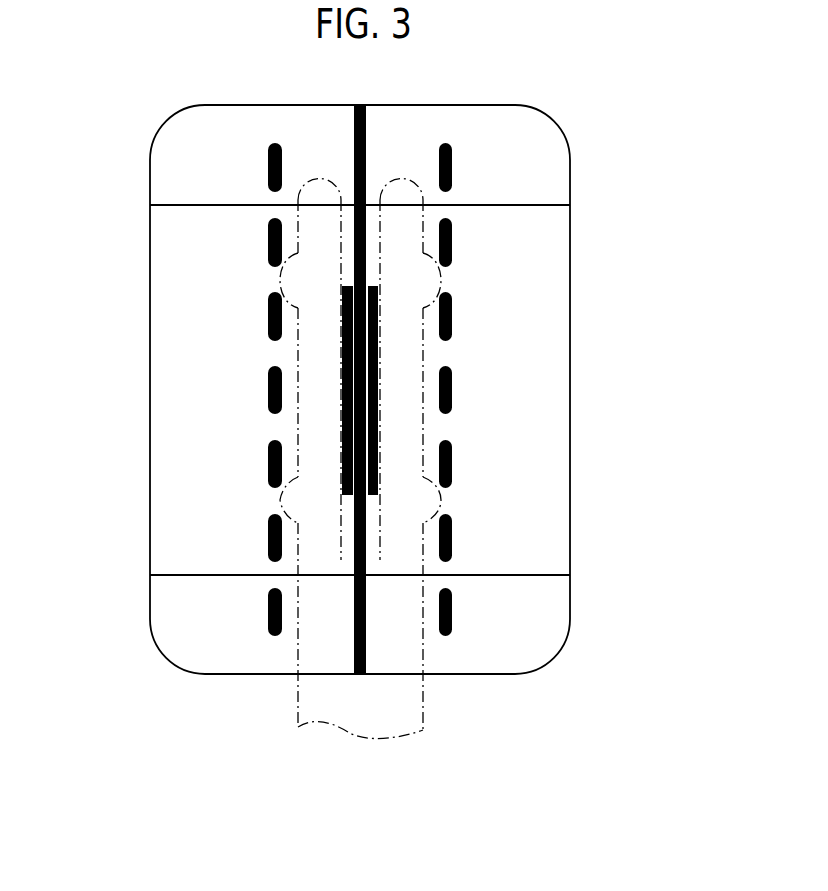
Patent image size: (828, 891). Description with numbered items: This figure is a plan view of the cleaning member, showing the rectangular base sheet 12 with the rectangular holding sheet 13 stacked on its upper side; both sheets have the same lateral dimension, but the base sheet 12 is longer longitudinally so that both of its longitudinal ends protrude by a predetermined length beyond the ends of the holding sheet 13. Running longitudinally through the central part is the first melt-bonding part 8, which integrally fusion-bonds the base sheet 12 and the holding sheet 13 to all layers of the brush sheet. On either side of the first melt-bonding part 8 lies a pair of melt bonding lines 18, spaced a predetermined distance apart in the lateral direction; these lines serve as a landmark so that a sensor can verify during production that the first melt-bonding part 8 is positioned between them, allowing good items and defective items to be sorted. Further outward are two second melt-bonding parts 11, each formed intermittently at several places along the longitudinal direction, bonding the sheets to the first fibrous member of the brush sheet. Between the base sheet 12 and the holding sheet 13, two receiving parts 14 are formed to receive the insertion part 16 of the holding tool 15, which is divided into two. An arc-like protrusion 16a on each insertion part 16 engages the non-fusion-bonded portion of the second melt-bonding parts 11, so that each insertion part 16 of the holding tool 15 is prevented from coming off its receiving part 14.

The first melt-bonding part 8 is at (366, 141).
The second melt-bonding parts 11 is at (268, 247).
The base sheet 12 is at (547, 182).
The holding sheet 13 is at (551, 557).
The receiving part 14 is at (312, 575).
The holding tool 15 is at (313, 705).
The insertion part 16 is at (310, 411).
The arc-like protrusion 16a is at (440, 278).
The melt bonding lines 18 is at (343, 433).